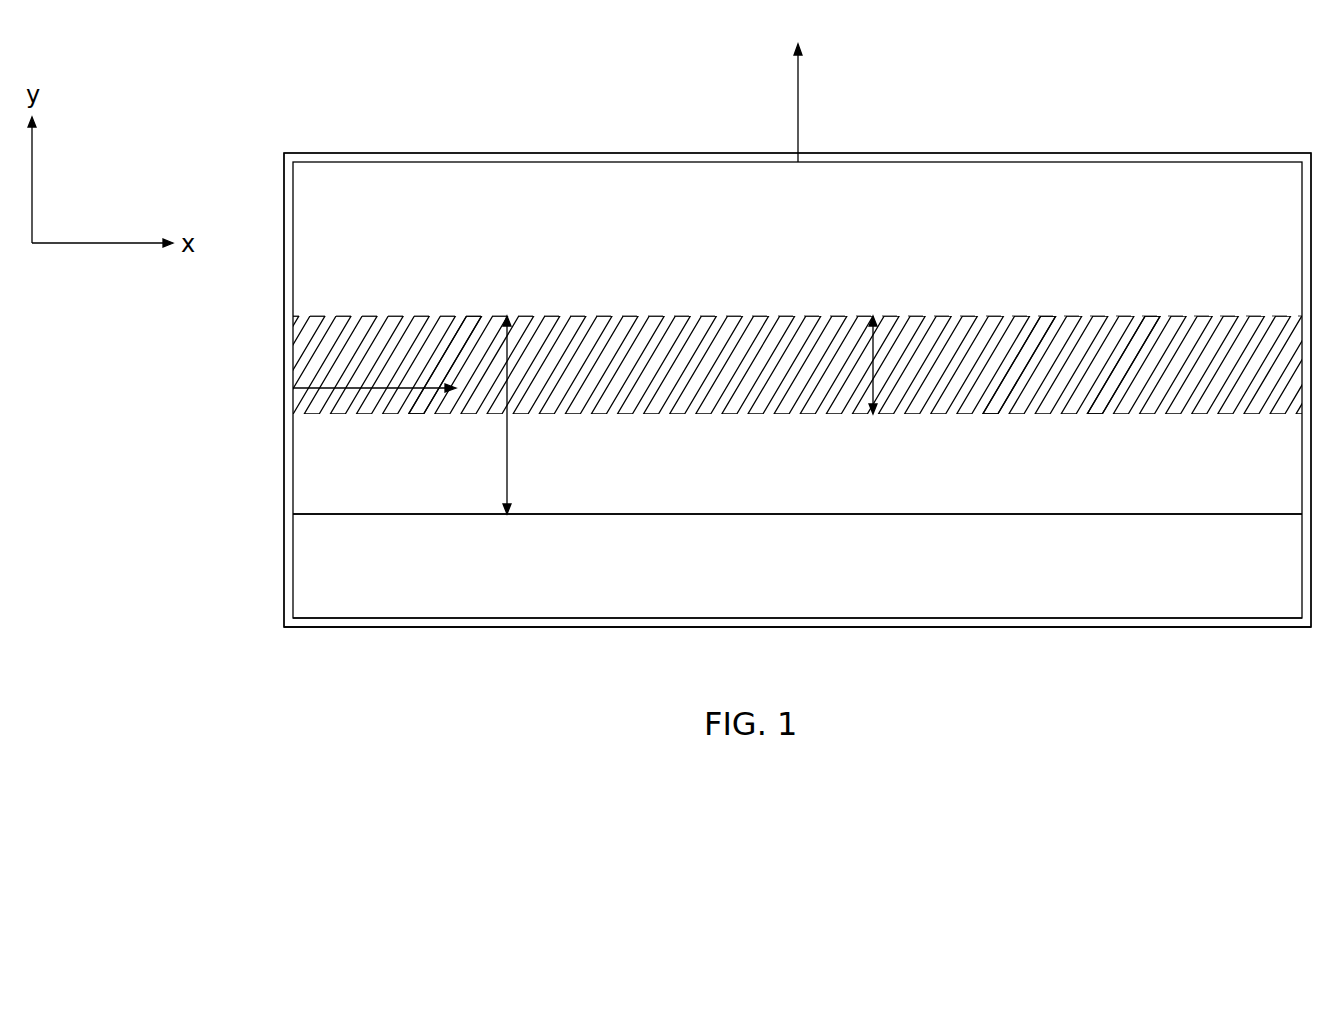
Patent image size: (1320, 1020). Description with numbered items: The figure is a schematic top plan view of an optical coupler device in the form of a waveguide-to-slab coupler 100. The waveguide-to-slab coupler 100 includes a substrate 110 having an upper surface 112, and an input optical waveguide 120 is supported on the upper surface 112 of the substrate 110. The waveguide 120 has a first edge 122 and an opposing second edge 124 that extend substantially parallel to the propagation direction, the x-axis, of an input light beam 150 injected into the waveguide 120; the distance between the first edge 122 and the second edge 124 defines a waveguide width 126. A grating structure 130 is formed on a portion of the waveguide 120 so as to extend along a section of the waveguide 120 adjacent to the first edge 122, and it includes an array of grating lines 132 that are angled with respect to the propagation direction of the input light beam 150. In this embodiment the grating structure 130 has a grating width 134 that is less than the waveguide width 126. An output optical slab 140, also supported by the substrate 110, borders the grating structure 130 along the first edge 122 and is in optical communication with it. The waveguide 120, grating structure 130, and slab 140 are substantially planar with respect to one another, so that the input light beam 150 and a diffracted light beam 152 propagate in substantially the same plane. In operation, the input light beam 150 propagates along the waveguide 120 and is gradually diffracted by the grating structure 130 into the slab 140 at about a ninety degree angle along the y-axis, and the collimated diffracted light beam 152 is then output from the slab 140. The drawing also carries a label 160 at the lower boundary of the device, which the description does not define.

The waveguide-to-slab coupler 100 is at (396, 77).
The substrate 110 is at (291, 570).
The upper surface 112 is at (497, 600).
The input optical waveguide 120 is at (726, 485).
The first edge 122 is at (735, 316).
The second edge 124 is at (940, 515).
The waveguide width 126 is at (510, 478).
The grating structure 130 is at (1190, 356).
The grating lines 132 is at (470, 338).
The grating width 134 is at (869, 319).
The output optical slab 140 is at (1103, 186).
The input light beam 150 is at (316, 388).
The diffracted light beam 152 is at (797, 108).
The outer boundary 160 is at (1196, 628).